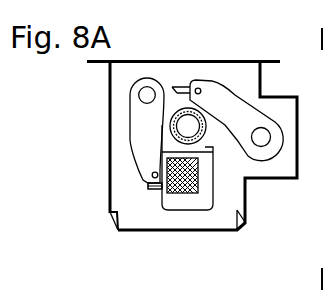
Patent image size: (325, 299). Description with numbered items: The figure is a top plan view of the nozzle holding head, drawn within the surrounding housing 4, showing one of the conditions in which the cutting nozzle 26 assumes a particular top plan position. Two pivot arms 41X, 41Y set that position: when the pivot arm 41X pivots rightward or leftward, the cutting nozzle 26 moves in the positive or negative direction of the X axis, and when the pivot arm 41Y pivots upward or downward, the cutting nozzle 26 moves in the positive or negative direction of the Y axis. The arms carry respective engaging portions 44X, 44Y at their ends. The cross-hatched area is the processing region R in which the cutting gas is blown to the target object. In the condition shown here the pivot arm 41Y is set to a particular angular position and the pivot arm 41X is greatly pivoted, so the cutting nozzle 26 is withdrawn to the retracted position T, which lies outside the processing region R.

The housing 4 is at (99, 95).
The pivot arm 41X is at (138, 124).
The pivot arm 41Y is at (231, 90).
The first engaging portion 44X is at (148, 187).
The second engaging portion 44Y is at (175, 87).
The retracted position T is at (188, 126).
The cutting nozzle 26 is at (206, 145).
The processing region R is at (181, 193).